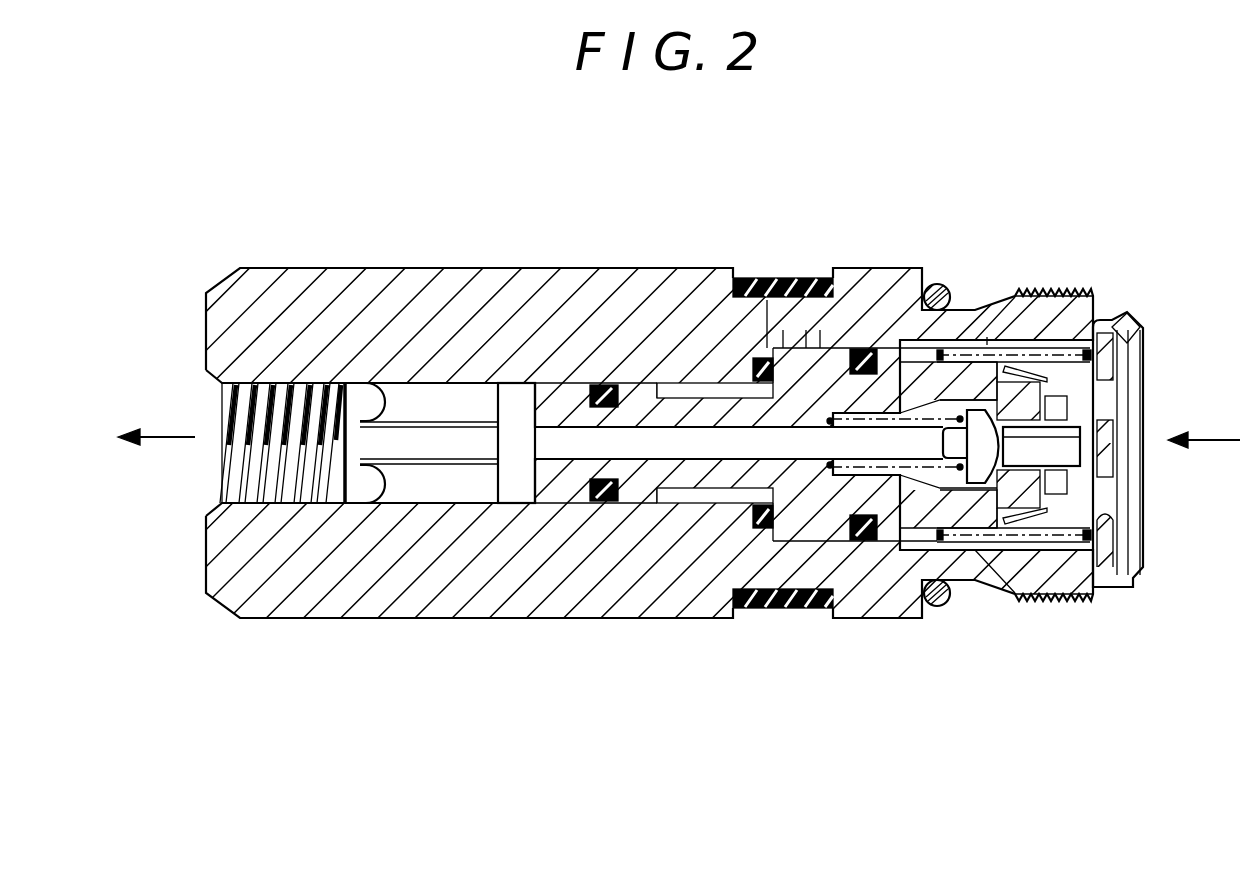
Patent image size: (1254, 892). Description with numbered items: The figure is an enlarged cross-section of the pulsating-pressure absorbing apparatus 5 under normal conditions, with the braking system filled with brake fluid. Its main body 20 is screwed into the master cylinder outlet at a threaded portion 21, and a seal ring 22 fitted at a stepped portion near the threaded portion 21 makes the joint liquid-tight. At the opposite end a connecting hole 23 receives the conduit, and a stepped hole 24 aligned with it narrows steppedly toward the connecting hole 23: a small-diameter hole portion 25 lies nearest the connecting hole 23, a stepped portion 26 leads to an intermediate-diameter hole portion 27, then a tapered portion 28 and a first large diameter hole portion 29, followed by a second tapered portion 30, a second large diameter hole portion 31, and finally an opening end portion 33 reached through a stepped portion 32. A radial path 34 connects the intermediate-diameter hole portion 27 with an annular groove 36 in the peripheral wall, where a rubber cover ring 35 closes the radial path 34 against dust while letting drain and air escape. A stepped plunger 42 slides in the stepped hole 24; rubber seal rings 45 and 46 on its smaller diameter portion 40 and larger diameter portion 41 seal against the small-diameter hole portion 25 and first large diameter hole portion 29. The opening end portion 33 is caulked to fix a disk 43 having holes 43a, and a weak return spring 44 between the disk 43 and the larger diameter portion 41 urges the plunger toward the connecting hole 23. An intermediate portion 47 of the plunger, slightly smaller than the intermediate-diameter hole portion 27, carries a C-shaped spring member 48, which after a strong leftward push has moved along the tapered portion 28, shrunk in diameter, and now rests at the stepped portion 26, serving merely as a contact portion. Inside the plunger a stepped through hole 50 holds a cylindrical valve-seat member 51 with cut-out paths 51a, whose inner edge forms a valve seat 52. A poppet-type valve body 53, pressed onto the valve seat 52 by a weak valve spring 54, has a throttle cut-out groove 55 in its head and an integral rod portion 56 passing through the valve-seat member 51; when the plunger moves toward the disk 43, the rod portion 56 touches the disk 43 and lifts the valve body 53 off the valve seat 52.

The pulsating-pressure absorbing apparatus 5 is at (1130, 228).
The main body 20 is at (356, 300).
The threaded portion 21 is at (1087, 292).
The seal ring 22 is at (940, 287).
The connecting hole 23 is at (230, 485).
The stepped hole 24 is at (520, 495).
The small-diameter hole portion 25 is at (521, 393).
The stepped portion 26 is at (715, 505).
The intermediate-diameter hole portion 27 is at (783, 345).
The tapered portion 28 is at (806, 345).
The first large diameter hole portion 29 is at (820, 345).
The second tapered portion 30 is at (987, 337).
The second large diameter hole portion 31 is at (1043, 333).
The stepped portion 32 is at (1133, 323).
The opening end portion 33 is at (1130, 317).
The radial path 34 is at (781, 608).
The rubber cover ring 35 is at (767, 300).
The annular groove 36 is at (743, 612).
The smaller diameter portion 40 is at (574, 385).
The larger diameter portion 41 is at (900, 370).
The stepped plunger 42 is at (692, 393).
The disk 43 is at (1108, 357).
The holes 43a is at (1108, 512).
The return spring 44 is at (1088, 585).
The rubber seal ring 45 is at (600, 502).
The rubber seal ring 46 is at (858, 349).
The intermediate portion 47 is at (790, 540).
The C-shaped spring member 48 is at (752, 362).
The stepped through hole 50 is at (585, 460).
The cylindrical valve-seat member 51 is at (1015, 380).
The cut-out paths 51a is at (1067, 404).
The valve seat 52 is at (1022, 528).
The poppet-type valve body 53 is at (983, 490).
The valve spring 54 is at (897, 470).
The throttle cut-out groove 55 is at (988, 408).
The rod portion 56 is at (1063, 450).